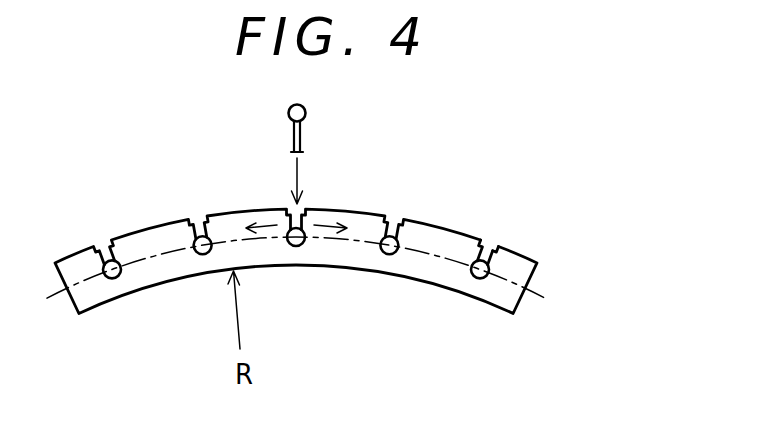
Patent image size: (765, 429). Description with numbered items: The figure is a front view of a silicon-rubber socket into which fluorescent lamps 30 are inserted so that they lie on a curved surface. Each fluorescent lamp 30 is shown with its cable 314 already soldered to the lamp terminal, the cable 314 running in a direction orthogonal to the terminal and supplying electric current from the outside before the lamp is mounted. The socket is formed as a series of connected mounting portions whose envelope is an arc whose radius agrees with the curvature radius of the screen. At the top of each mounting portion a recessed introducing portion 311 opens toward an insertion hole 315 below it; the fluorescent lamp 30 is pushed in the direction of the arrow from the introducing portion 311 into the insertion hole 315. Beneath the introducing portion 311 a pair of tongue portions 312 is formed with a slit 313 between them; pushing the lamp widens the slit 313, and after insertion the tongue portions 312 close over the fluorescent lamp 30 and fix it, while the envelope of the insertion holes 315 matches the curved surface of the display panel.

The fluorescent lamp 30 is at (306, 112).
The cable 314 is at (301, 145).
The introducing portion 311 is at (482, 255).
The slit 313 is at (493, 253).
The tongue portion 312 is at (473, 268).
The insertion hole 315 is at (488, 278).